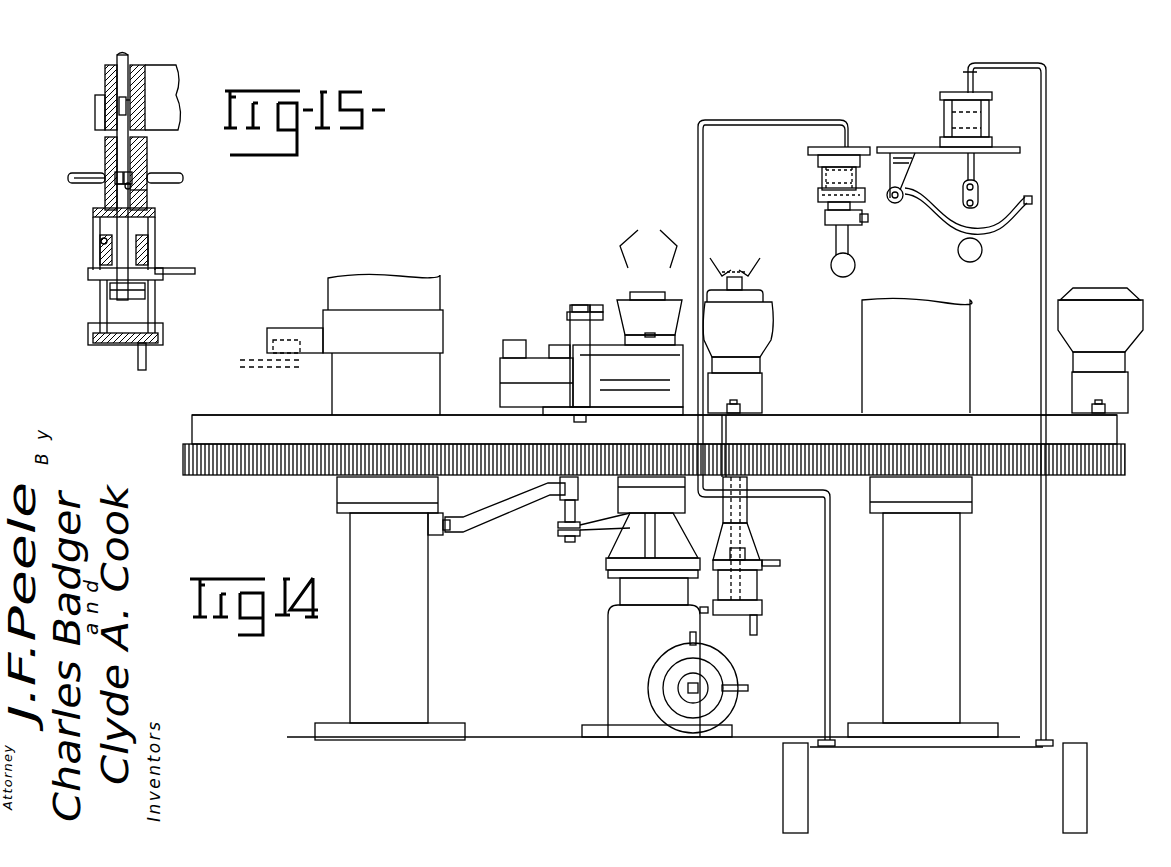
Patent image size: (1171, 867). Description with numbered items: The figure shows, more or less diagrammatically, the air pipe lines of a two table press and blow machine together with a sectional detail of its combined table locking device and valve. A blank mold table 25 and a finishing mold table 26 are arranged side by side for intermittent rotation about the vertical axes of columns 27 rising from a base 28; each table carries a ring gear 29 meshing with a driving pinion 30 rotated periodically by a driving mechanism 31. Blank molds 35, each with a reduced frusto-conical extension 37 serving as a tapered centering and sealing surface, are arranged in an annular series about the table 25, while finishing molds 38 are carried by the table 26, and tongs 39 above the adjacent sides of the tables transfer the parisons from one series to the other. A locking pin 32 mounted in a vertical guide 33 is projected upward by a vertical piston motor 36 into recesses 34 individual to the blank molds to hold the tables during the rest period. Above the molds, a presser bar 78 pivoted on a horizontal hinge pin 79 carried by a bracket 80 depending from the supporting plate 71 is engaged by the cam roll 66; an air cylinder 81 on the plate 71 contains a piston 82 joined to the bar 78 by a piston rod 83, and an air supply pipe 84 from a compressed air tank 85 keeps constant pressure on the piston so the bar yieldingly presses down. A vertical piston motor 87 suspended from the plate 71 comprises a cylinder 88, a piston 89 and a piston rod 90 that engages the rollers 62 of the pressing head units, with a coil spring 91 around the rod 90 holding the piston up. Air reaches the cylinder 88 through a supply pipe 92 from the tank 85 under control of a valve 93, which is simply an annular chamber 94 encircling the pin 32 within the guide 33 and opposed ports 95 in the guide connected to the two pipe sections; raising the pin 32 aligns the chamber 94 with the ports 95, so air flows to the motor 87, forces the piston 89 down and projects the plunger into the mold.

In FIG. 15, the blank mold table 25 is at (106, 72).
In FIG. 14, the blank mold table 25 is at (1023, 415).
In FIG. 14, the finishing mold table 26 is at (471, 413).
In FIG. 14, the column 27 is at (428, 600).
In FIG. 14, the base 28 is at (545, 745).
In FIG. 15, the ring gear 29 is at (96, 104).
In FIG. 14, the ring gear 29 is at (297, 477).
In FIG. 14, the driving pinion 30 is at (645, 440).
In FIG. 14, the driving mechanism 31 is at (618, 596).
In FIG. 15, the locking pin 32 is at (122, 137).
In FIG. 14, the locking pin 32 is at (735, 478).
In FIG. 15, the vertical guide 33 is at (106, 152).
In FIG. 14, the vertical guide 33 is at (748, 515).
In FIG. 15, the recess 34 is at (119, 108).
In FIG. 14, the blank mold 35 is at (770, 323).
In FIG. 15, the vertical piston motor 36 is at (155, 305).
In FIG. 14, the vertical piston motor 36 is at (757, 583).
In FIG. 14, the frusto-conical extension 37 is at (757, 300).
In FIG. 14, the finishing mold 38 is at (625, 308).
In FIG. 14, the transferring tongs 39 is at (735, 259).
In FIG. 14, the roller 62 is at (852, 263).
In FIG. 14, the cam roll 66 is at (982, 250).
In FIG. 14, the supporting plate 71 is at (1012, 153).
In FIG. 14, the presser bar 78 is at (946, 230).
In FIG. 14, the horizontal hinge pin 79 is at (895, 204).
In FIG. 14, the bracket 80 is at (902, 170).
In FIG. 14, the air cylinder 81 is at (987, 113).
In FIG. 14, the piston 82 is at (975, 122).
In FIG. 14, the piston rod 83 is at (974, 166).
In FIG. 14, the air supply pipe 84 is at (1047, 150).
In FIG. 14, the compressed air tank 85 is at (808, 773).
In FIG. 14, the vertical piston motor 87 is at (818, 178).
In FIG. 14, the cylinder 88 is at (820, 170).
In FIG. 14, the piston 89 is at (830, 190).
In FIG. 14, the piston rod 90 is at (836, 242).
In FIG. 14, the coil spring 91 is at (830, 206).
In FIG. 15, the supply pipe 92 is at (76, 183).
In FIG. 14, the supply pipe 92 is at (812, 118).
In FIG. 15, the valve 93 is at (158, 167).
In FIG. 14, the valve 93 is at (752, 520).
In FIG. 15, the annular chamber 94 is at (146, 196).
In FIG. 15, the ports 95 is at (131, 170).